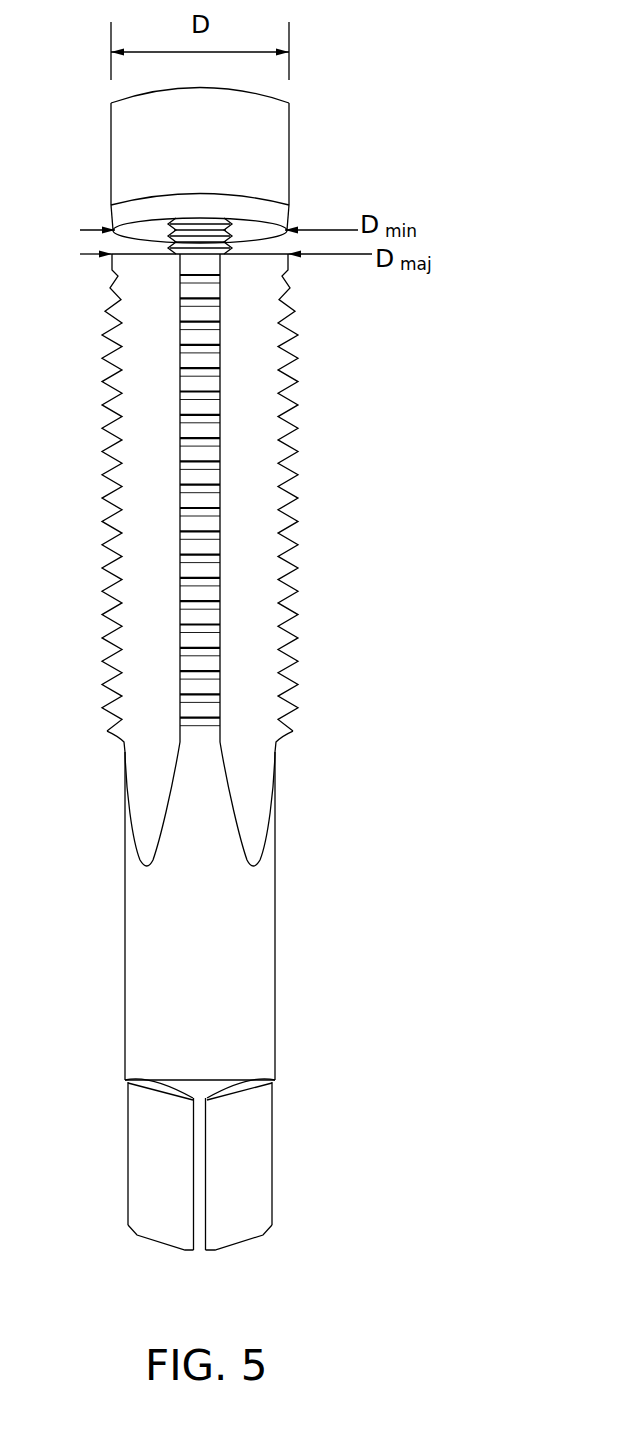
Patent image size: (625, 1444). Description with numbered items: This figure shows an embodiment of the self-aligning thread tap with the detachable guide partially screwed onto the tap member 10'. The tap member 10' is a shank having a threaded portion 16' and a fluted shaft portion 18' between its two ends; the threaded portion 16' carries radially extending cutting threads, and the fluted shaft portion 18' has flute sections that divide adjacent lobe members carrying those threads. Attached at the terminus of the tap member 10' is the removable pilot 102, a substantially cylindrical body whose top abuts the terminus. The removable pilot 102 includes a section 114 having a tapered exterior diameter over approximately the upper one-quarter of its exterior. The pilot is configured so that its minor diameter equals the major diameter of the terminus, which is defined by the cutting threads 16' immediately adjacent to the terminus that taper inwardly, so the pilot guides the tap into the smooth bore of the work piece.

The tap member 10' is at (304, 752).
The threaded portion 16' is at (276, 503).
The fluted shaft portion 18' is at (315, 511).
The removable pilot 102 is at (340, 137).
The section having a tapered exterior diameter 114 is at (297, 212).